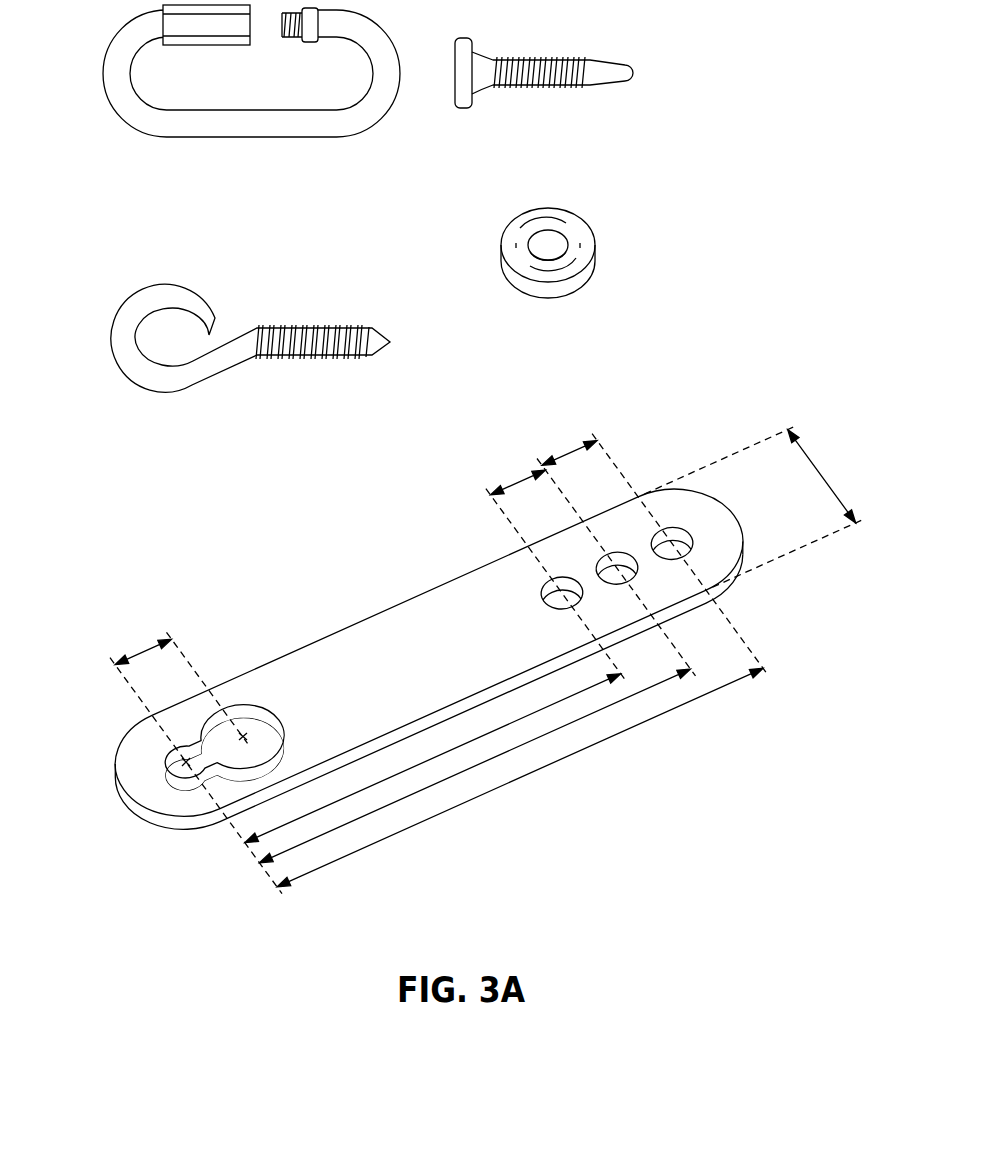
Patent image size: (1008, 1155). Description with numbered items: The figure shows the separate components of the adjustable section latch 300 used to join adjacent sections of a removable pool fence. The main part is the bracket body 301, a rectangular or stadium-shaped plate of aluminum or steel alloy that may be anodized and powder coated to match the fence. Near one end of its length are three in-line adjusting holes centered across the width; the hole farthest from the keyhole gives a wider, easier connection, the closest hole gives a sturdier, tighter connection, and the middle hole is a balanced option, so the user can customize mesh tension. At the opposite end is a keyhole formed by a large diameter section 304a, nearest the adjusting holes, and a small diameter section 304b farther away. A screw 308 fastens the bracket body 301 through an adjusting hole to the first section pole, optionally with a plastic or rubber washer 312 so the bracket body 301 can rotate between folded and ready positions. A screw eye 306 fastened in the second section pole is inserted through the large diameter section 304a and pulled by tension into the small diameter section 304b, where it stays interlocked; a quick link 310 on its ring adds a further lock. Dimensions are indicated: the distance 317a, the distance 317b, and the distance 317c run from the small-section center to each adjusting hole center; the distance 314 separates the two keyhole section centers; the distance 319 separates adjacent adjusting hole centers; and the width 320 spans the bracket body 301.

The adjustable section latch 300 is at (463, 644).
The bracket body 301 is at (420, 590).
The large diameter section 304a is at (250, 703).
The small diameter section 304b is at (160, 752).
The screw eye 306 is at (143, 291).
The screw 308 is at (553, 60).
The quick link 310 is at (291, 137).
The washer 312 is at (560, 209).
The distance between the centers of the large and small diameter sections 314 is at (152, 652).
The distance 317a is at (502, 731).
The distance 317b is at (463, 778).
The distance 317c is at (425, 823).
The distance between two centers of the adjusting holes 319 is at (522, 480).
The plate width 320 is at (820, 475).